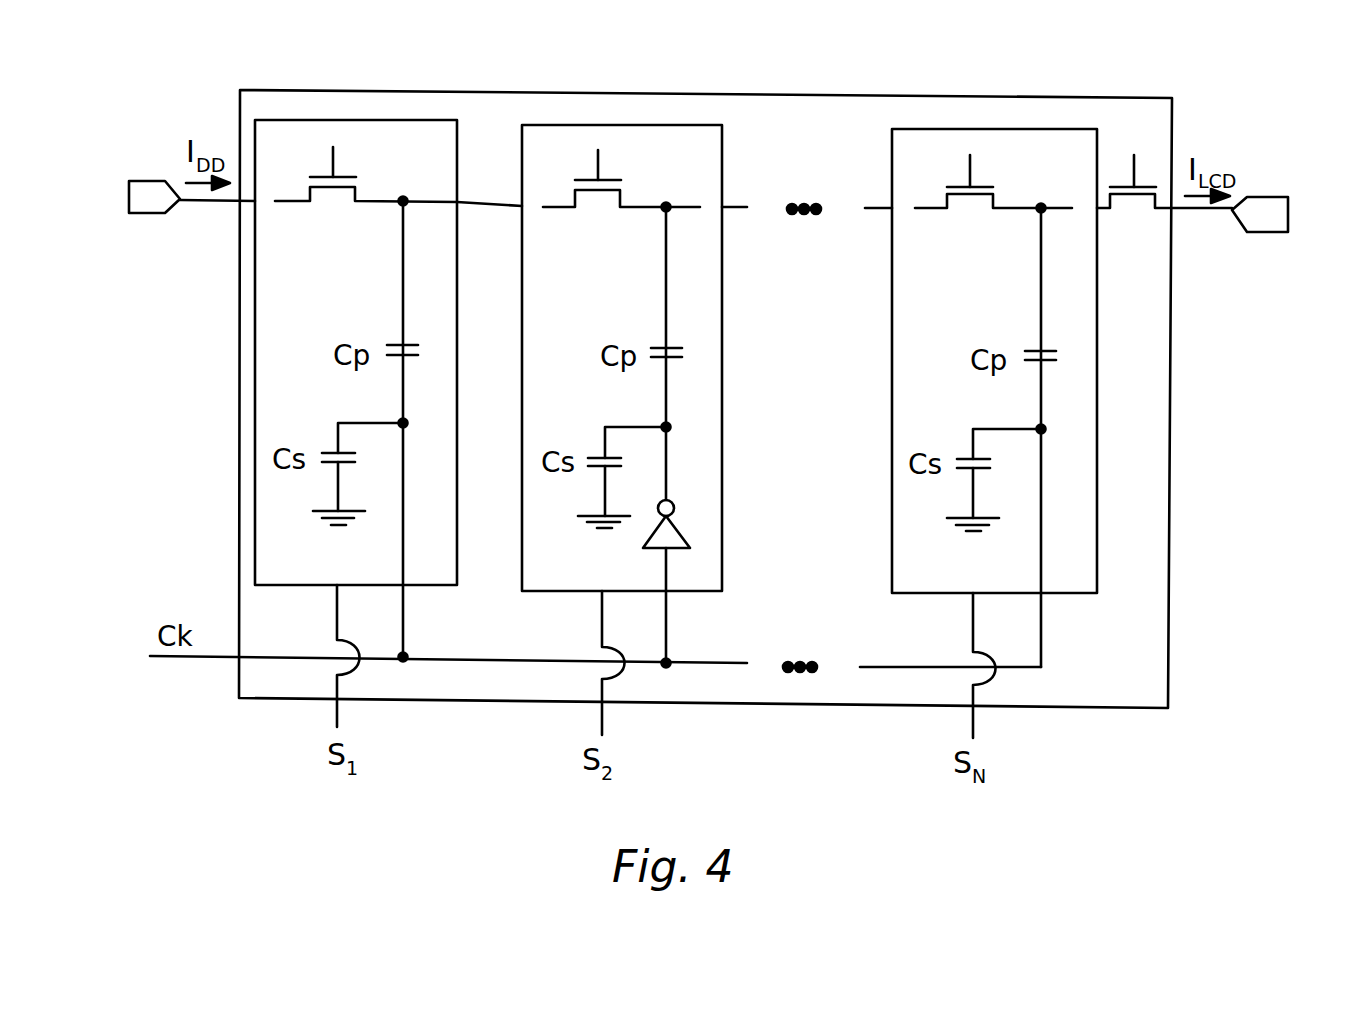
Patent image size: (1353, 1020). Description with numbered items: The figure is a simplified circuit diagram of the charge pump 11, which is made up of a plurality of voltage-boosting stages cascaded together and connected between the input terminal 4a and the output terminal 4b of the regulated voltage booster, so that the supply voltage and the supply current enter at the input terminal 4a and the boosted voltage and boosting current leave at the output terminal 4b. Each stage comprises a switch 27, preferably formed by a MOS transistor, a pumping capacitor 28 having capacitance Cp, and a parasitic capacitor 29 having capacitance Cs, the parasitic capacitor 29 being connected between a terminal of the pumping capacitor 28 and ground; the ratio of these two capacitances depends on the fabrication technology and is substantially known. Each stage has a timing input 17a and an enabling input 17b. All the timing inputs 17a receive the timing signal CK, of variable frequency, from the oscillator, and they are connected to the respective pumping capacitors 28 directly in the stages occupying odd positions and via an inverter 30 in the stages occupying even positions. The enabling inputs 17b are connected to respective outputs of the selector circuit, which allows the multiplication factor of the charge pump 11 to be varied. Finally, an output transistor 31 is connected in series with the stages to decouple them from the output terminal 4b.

The charge pump 11 is at (767, 118).
The input terminal 4a is at (146, 213).
The output terminal 4b is at (1252, 216).
The switch 27 is at (337, 197).
The pumping capacitor 28 is at (387, 344).
The parasitic capacitor 29 is at (336, 453).
The inverter 30 is at (668, 536).
The output transistor 31 is at (1128, 205).
The timing input 17a is at (403, 625).
The enabling input 17b is at (337, 623).